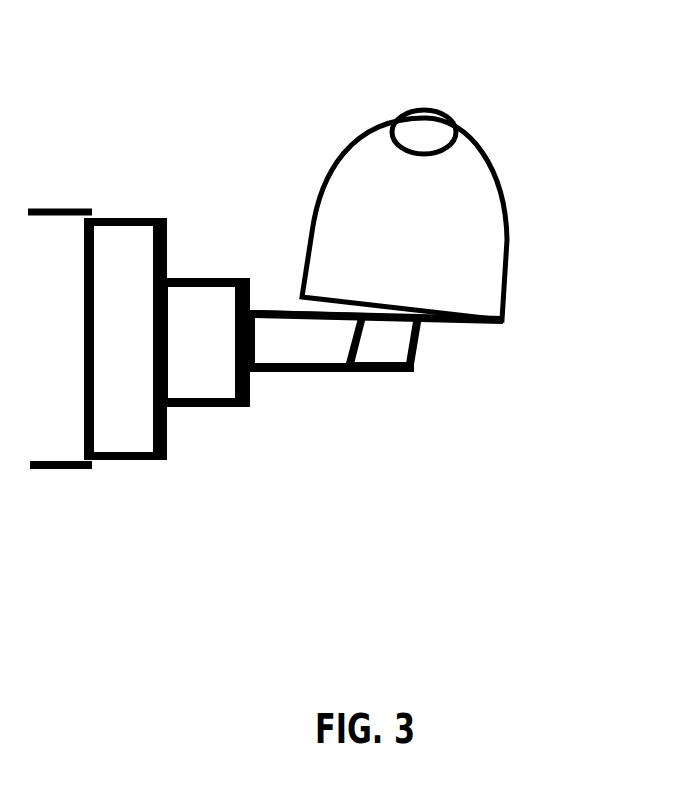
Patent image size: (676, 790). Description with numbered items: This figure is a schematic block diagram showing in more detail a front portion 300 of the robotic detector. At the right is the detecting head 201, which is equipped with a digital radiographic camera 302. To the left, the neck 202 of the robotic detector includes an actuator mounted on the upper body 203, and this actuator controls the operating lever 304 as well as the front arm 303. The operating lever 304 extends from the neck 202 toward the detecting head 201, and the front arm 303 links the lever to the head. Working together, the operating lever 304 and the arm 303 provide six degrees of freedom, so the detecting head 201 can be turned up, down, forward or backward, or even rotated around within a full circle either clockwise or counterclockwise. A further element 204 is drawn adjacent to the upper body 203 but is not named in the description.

The detecting head 201 is at (502, 202).
The neck 202 is at (208, 387).
The upper body 203 is at (133, 435).
The support rail 204 is at (33, 452).
The front portion 300 is at (295, 498).
The digital radiographic camera 302 is at (440, 125).
The front arm 303 is at (418, 352).
The operating lever 304 is at (317, 368).